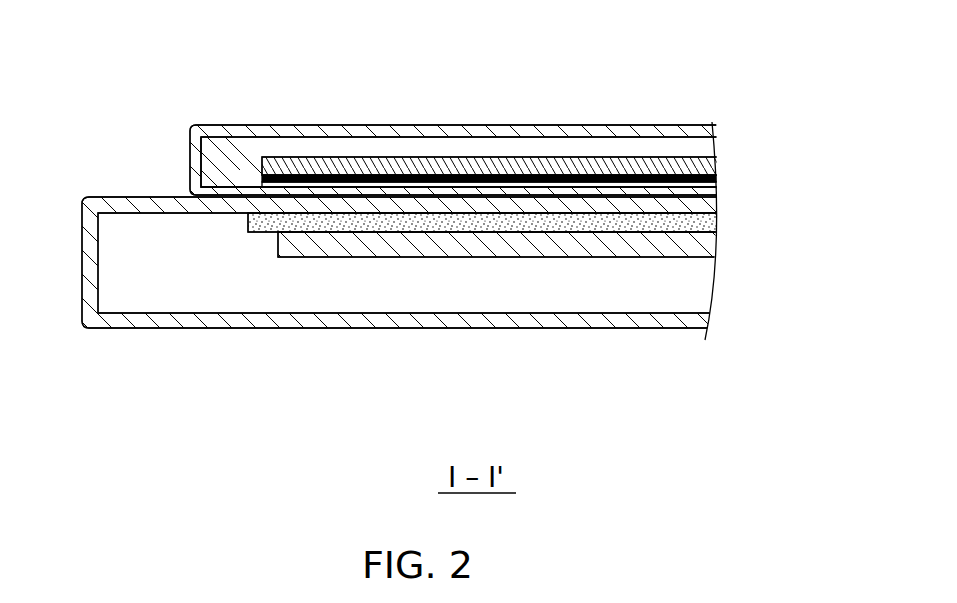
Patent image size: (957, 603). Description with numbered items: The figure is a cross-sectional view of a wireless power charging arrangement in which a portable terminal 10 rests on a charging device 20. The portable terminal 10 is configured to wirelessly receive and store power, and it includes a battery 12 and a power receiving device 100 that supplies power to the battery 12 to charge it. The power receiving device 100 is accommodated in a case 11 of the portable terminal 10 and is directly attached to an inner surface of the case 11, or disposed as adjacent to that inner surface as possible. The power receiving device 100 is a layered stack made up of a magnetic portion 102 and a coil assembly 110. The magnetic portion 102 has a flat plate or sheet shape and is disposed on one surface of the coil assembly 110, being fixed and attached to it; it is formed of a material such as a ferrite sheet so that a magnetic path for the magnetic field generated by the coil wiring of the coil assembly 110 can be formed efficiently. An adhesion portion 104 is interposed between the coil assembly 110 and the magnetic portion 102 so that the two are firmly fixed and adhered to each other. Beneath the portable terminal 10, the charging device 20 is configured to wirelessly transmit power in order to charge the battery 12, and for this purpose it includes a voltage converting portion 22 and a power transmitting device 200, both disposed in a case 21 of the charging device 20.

The portable terminal 10 is at (500, 113).
The case 11 is at (245, 190).
The battery 12 is at (714, 162).
The power receiving device 100 is at (565, 182).
The magnetic portion 102 is at (711, 177).
The adhesion portion 104 is at (711, 178).
The coil assembly 110 is at (711, 188).
The charging device 20 is at (456, 313).
The case 21 is at (258, 323).
The voltage converting portion 22 is at (716, 245).
The power transmitting device 200 is at (714, 222).